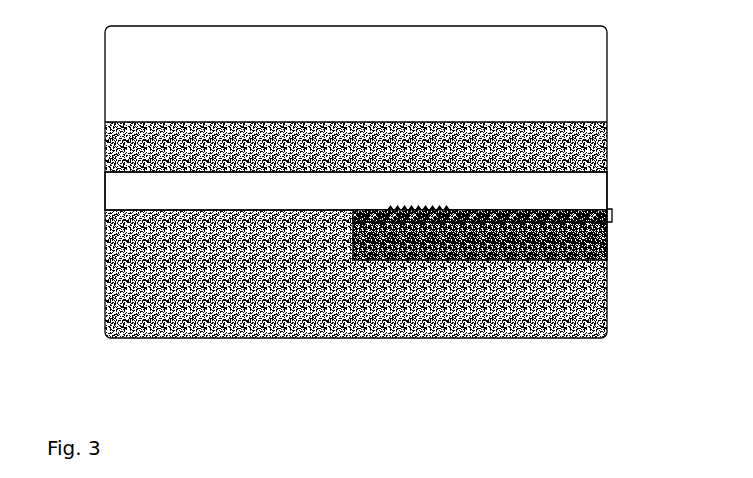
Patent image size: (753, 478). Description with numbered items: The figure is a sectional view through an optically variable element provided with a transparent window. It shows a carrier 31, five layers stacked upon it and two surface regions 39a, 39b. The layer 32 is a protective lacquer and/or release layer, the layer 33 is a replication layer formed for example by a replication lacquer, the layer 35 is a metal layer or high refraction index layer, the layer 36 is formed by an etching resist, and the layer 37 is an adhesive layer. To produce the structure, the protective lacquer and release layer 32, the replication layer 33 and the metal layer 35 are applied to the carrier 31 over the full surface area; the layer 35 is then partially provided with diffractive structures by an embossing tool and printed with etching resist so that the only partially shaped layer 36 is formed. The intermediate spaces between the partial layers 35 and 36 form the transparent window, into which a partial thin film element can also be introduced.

The carrier 31 is at (597, 82).
The protective lacquer and/or release layer 32 is at (105, 146).
The replication layer 33 is at (598, 190).
The metal layer 35 is at (610, 213).
The etching resist layer 36 is at (607, 247).
The adhesive layer 37 is at (572, 292).
The surface region 39a is at (230, 297).
The surface region 39b is at (488, 328).